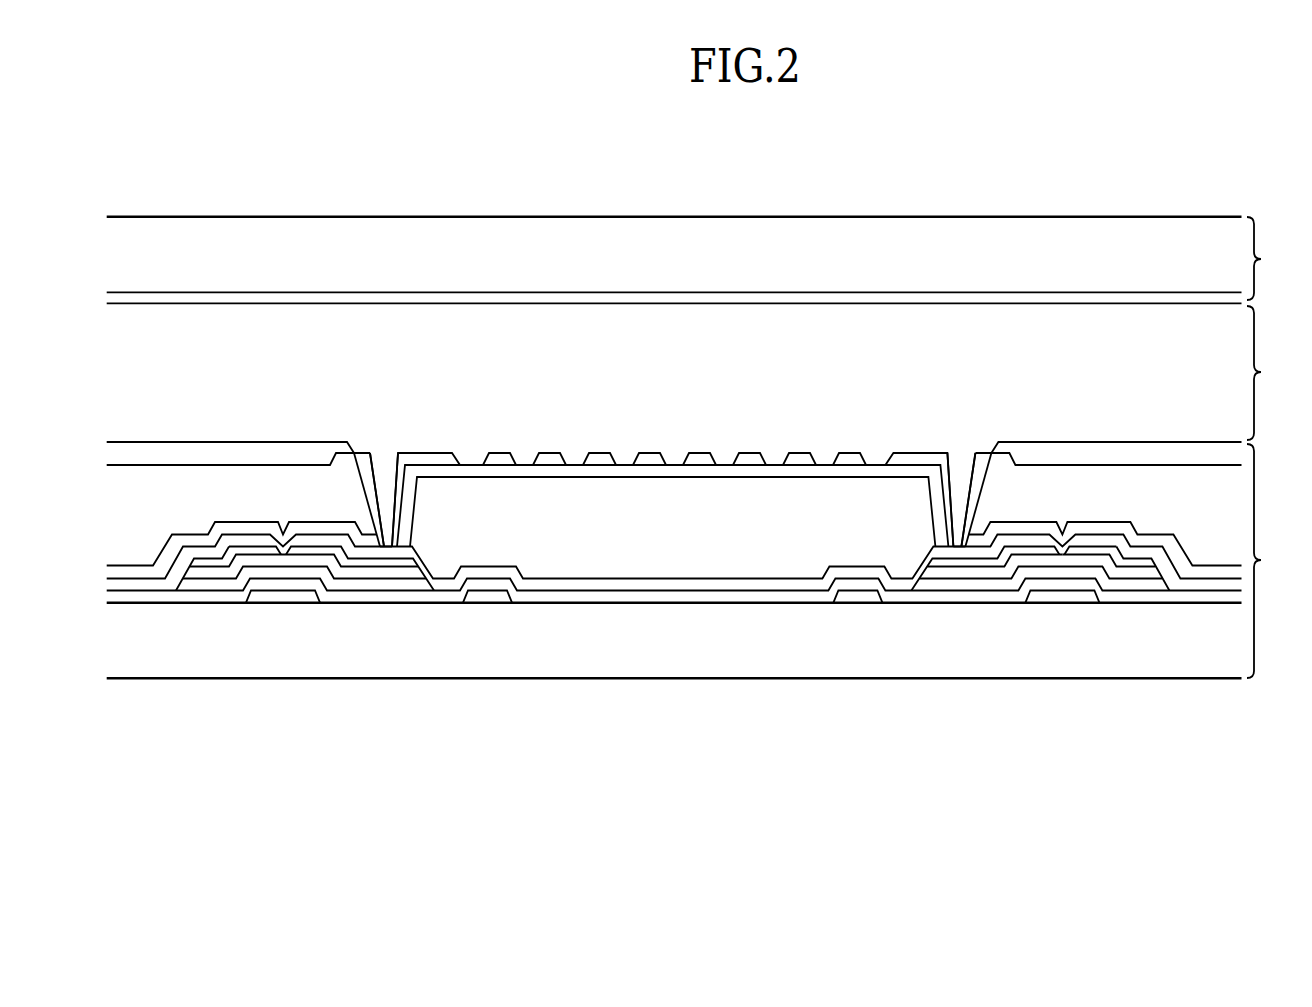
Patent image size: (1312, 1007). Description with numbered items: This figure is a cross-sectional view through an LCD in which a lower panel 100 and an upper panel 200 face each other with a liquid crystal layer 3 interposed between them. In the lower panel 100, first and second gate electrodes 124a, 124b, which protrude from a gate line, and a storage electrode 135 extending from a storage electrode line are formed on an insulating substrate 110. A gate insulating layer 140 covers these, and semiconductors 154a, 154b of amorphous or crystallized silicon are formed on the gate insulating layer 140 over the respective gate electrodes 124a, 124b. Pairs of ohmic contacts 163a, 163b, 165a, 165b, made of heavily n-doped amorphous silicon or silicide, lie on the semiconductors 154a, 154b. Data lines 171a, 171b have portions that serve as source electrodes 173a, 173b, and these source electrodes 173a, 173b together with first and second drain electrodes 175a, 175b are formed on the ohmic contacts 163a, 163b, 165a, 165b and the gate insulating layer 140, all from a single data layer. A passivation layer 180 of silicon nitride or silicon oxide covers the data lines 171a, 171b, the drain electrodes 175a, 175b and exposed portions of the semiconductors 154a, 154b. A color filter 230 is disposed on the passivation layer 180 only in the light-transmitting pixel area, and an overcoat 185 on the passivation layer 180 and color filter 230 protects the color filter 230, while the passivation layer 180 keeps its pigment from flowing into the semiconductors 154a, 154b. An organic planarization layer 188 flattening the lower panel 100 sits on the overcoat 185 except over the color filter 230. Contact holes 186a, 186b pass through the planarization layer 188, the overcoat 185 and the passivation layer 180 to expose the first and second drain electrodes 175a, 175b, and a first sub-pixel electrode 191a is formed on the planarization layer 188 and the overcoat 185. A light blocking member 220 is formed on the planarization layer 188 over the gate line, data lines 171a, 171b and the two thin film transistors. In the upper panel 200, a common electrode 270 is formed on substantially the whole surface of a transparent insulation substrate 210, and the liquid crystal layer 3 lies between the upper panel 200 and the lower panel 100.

The liquid crystal layer 3 is at (1265, 373).
The lower panel 100 is at (1274, 561).
The insulating substrate 110 is at (743, 655).
The first gate electrode 124a is at (1050, 598).
The second gate electrode 124b is at (292, 598).
The storage electrode 135 is at (487, 600).
The gate insulating layer 140 is at (548, 597).
The semiconductor 154a is at (1083, 570).
The semiconductor 154b is at (262, 570).
The ohmic contact 163a is at (1128, 566).
The ohmic contact 163b is at (218, 566).
The ohmic contact 165a is at (999, 568).
The ohmic contact 165b is at (346, 568).
The data line 171a is at (1155, 590).
The data line 171b is at (191, 590).
The source electrode 173a is at (1098, 560).
The source electrode 173b is at (246, 560).
The first drain electrode 175a is at (953, 562).
The second drain electrode 175b is at (390, 562).
The passivation layer 180 is at (190, 586).
The overcoat 185 is at (132, 570).
The contact hole 186a is at (981, 498).
The contact hole 186b is at (364, 498).
The planarization layer 188 is at (148, 495).
The first sub-pixel electrode 191a is at (420, 455).
The upper panel 200 is at (1274, 258).
The transparent insulation substrate 210 is at (913, 240).
The light blocking member 220 is at (300, 451).
The color filter 230 is at (605, 555).
The common electrode 270 is at (789, 300).